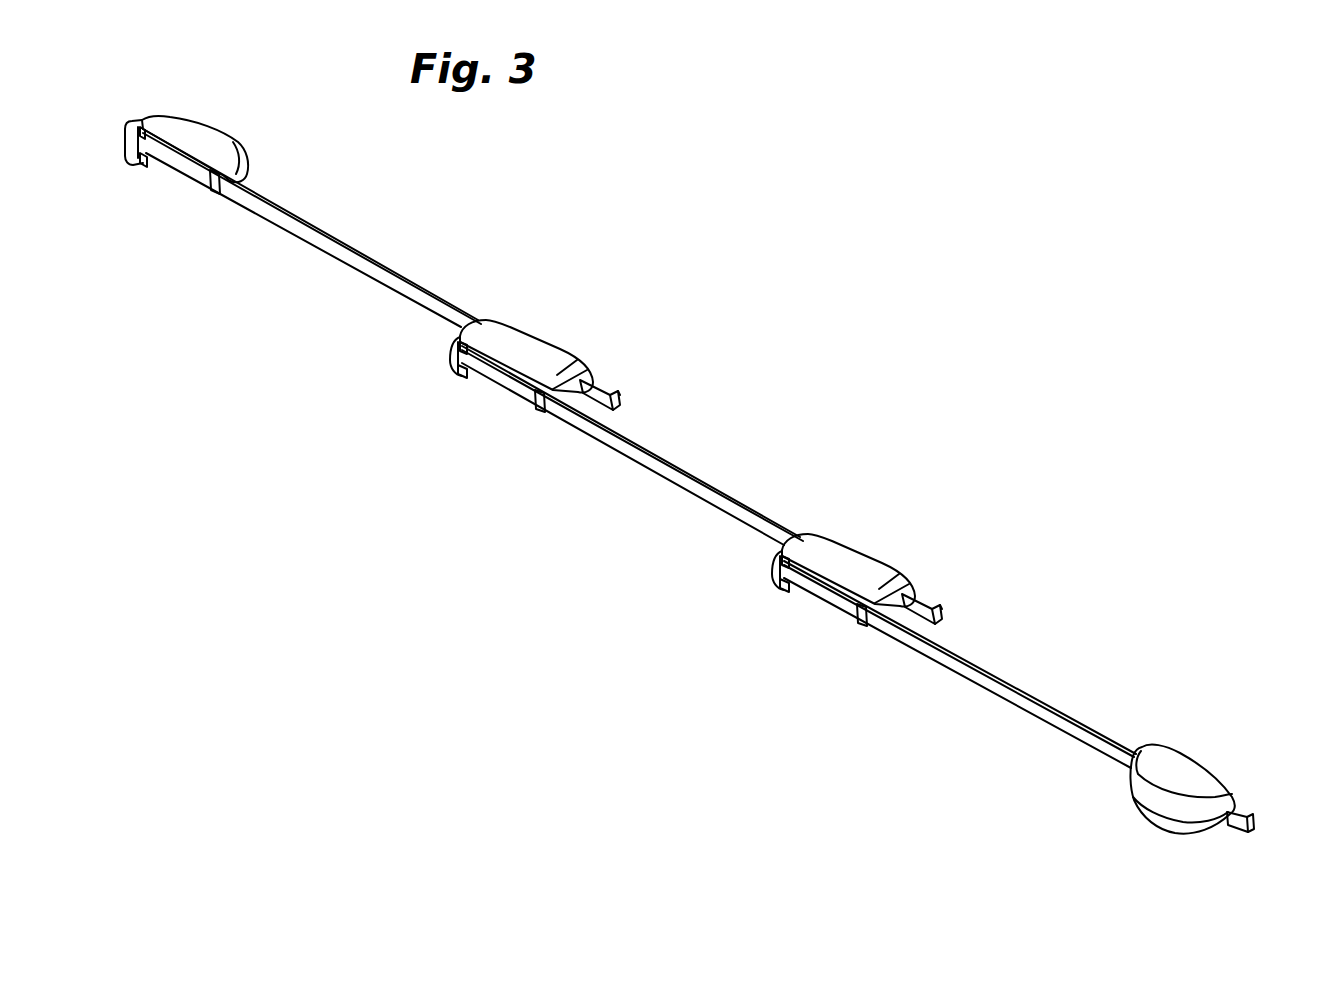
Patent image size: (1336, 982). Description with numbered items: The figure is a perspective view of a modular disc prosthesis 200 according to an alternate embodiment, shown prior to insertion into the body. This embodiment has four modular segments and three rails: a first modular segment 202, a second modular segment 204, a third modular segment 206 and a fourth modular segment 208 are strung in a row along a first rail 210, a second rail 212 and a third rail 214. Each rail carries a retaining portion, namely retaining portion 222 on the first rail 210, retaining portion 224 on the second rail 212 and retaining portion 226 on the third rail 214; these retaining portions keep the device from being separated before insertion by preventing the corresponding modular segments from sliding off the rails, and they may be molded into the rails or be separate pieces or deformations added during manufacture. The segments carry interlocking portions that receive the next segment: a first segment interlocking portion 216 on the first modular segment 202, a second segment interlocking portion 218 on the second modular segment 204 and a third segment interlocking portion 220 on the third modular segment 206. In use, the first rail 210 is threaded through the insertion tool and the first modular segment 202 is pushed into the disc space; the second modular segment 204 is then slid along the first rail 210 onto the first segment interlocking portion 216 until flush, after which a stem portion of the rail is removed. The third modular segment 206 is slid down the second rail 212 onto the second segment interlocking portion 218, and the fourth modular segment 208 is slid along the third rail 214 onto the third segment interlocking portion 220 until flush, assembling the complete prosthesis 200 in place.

The modular disc prosthesis 200 is at (764, 372).
The first modular segment 202 is at (213, 132).
The second modular segment 204 is at (523, 339).
The third modular segment 206 is at (845, 557).
The fourth modular segment 208 is at (1171, 766).
The first rail 210 is at (347, 246).
The second rail 212 is at (711, 486).
The third rail 214 is at (997, 676).
The first segment interlocking portion 216 is at (175, 165).
The second segment interlocking portion 218 is at (497, 379).
The third segment interlocking portion 220 is at (826, 596).
The retaining portion 222 is at (622, 402).
The retaining portion 224 is at (938, 612).
The retaining portion 226 is at (1254, 833).